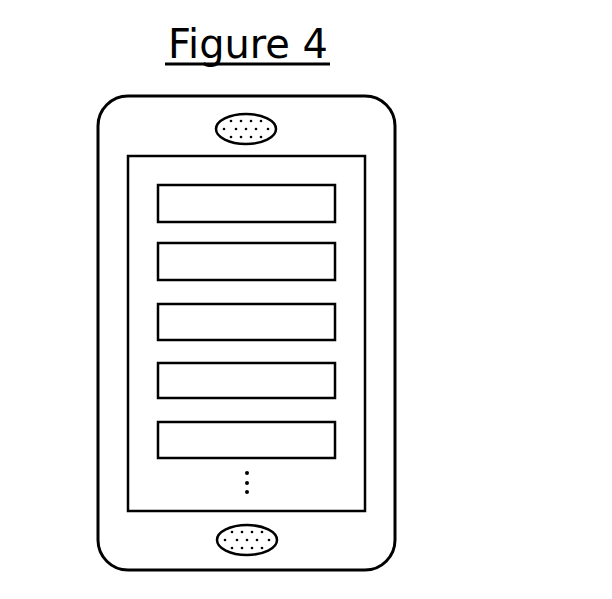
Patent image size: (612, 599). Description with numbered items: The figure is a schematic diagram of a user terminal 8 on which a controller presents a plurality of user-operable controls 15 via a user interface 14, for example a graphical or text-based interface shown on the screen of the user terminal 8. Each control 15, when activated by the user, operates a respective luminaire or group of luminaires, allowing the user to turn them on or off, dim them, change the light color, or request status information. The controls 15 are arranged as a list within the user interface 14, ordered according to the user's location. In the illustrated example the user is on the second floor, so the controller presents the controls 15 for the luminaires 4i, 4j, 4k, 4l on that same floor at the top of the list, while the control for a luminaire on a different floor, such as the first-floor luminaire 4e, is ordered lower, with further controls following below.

The user terminal 8 is at (395, 225).
The user interface 14 is at (365, 350).
The user-operable control 15 is at (187, 203).
The ceiling mounted luminaire 4i is at (246, 203).
The ceiling mounted luminaire 4j is at (246, 261).
The ceiling mounted luminaire 4k is at (246, 322).
The luminaire 4l is at (246, 380).
The ceiling mounted luminaire 4e is at (246, 440).